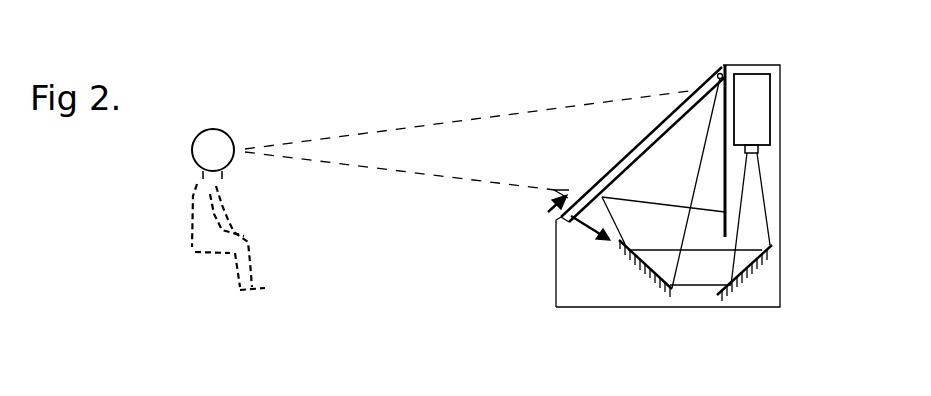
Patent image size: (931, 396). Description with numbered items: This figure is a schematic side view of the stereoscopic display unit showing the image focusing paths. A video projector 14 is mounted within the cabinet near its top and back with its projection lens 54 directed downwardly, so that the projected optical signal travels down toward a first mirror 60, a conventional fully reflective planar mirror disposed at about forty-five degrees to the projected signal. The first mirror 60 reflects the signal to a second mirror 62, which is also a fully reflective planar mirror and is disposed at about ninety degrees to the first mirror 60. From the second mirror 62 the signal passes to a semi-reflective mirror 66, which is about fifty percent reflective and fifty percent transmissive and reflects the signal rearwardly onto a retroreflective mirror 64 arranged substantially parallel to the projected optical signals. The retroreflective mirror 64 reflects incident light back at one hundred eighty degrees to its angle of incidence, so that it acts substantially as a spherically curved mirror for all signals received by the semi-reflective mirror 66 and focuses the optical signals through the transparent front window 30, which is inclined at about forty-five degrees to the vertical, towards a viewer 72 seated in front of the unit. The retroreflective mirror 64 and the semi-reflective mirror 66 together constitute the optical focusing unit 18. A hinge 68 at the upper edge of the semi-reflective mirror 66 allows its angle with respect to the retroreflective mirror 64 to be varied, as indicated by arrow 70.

The video projector 14 is at (771, 117).
The optical focusing unit 18 is at (769, 223).
The front window 30 is at (685, 101).
The projection lens 54 is at (760, 150).
The first mirror 60 is at (744, 286).
The second mirror 62 is at (641, 276).
The retroreflective mirror 64 is at (727, 115).
The semi-reflective mirror 66 is at (585, 230).
The hinge 68 is at (720, 72).
The arrow 70 is at (548, 212).
The viewer 72 is at (192, 160).